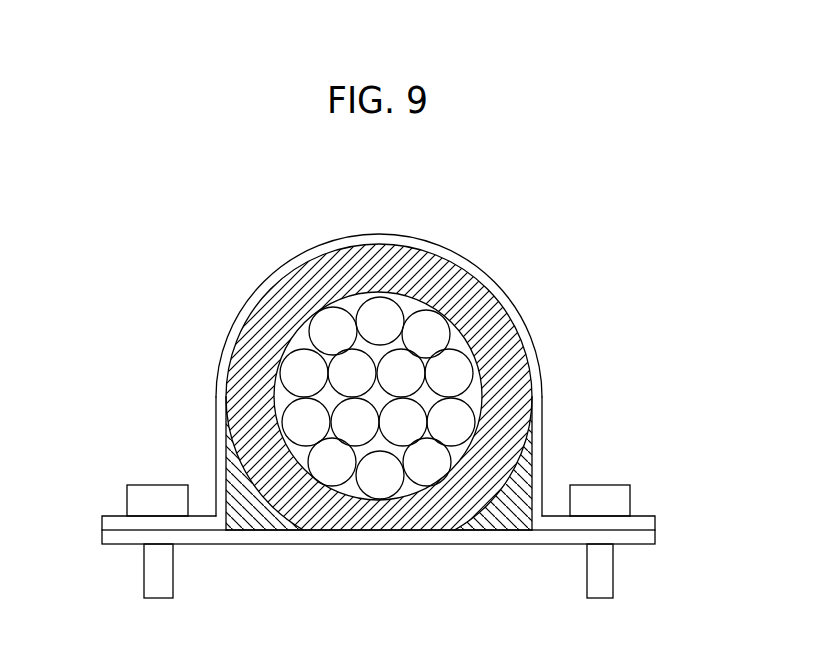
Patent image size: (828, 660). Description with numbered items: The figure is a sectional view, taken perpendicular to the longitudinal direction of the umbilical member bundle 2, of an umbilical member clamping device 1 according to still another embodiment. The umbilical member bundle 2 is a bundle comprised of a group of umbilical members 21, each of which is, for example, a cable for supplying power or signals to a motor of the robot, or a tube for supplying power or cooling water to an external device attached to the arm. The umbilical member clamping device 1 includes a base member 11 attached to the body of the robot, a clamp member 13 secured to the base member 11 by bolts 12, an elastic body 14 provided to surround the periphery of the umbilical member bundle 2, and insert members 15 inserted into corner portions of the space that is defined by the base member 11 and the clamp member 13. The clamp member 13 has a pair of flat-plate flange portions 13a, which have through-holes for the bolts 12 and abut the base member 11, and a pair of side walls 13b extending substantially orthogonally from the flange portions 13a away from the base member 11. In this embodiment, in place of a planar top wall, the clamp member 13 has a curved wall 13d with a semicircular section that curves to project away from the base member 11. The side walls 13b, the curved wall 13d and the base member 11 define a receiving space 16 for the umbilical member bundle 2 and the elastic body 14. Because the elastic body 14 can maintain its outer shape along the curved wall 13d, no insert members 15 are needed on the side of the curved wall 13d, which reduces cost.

The umbilical member clamping device 1 is at (49, 169).
The umbilical member bundle 2 is at (412, 300).
The base member 11 is at (633, 545).
The bolts 12 is at (158, 484).
The clamp member 13 is at (288, 254).
The flange portions 13a is at (115, 515).
The side walls 13b is at (215, 408).
The curved wall 13d is at (456, 250).
The elastic body 14 is at (513, 357).
The insert members 15 is at (232, 490).
The receiving space 16 is at (513, 525).
The umbilical members 21 is at (391, 303).